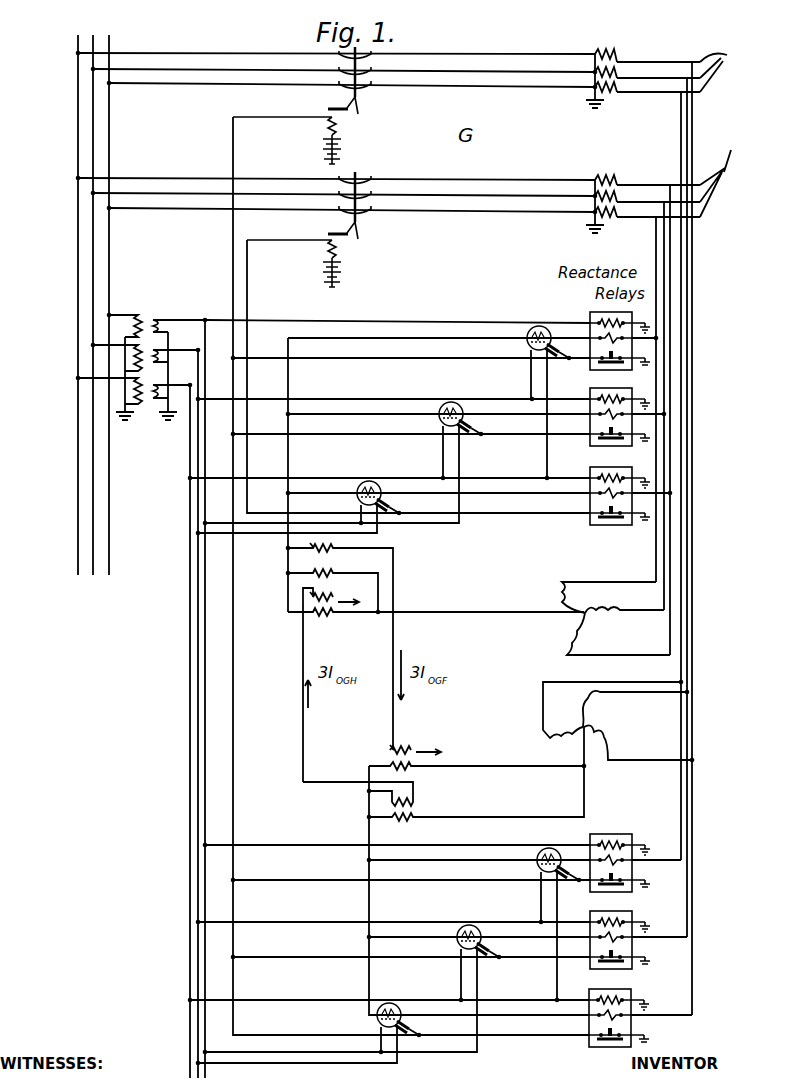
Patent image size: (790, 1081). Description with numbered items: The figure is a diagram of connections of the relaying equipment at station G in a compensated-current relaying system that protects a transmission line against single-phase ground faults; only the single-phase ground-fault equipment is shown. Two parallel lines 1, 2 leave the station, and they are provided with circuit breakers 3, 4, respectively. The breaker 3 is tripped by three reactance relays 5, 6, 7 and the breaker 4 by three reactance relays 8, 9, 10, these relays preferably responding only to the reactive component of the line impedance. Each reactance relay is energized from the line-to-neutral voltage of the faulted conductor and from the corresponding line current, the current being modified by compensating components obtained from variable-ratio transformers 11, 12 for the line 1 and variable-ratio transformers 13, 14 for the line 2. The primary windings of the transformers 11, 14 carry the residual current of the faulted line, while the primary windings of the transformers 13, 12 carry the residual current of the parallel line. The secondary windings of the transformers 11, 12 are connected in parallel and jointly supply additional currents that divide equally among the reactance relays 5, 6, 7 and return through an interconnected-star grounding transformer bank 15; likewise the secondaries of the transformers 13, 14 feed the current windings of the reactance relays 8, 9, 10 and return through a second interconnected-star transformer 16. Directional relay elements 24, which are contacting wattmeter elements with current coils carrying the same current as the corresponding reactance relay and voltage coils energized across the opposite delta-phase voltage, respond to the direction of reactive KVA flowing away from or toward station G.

The line 1 is at (718, 182).
The line 2 is at (717, 69).
The circuit breaker 3 is at (365, 178).
The circuit breaker 4 is at (366, 87).
The reactance relay 5 is at (633, 468).
The reactance relay 6 is at (633, 389).
The reactance relay 7 is at (633, 312).
The reactance relay 8 is at (633, 990).
The reactance relay 9 is at (633, 911).
The reactance relay 10 is at (633, 834).
The variable-ratio transformer 11 is at (336, 568).
The variable-ratio transformer 12 is at (334, 604).
The variable-ratio transformer 13 is at (410, 814).
The variable-ratio transformer 14 is at (390, 760).
The interconnected-star transformer bank 15 is at (625, 642).
The interconnected-star transformer 16 is at (648, 734).
The directional relay element 24 is at (545, 327).